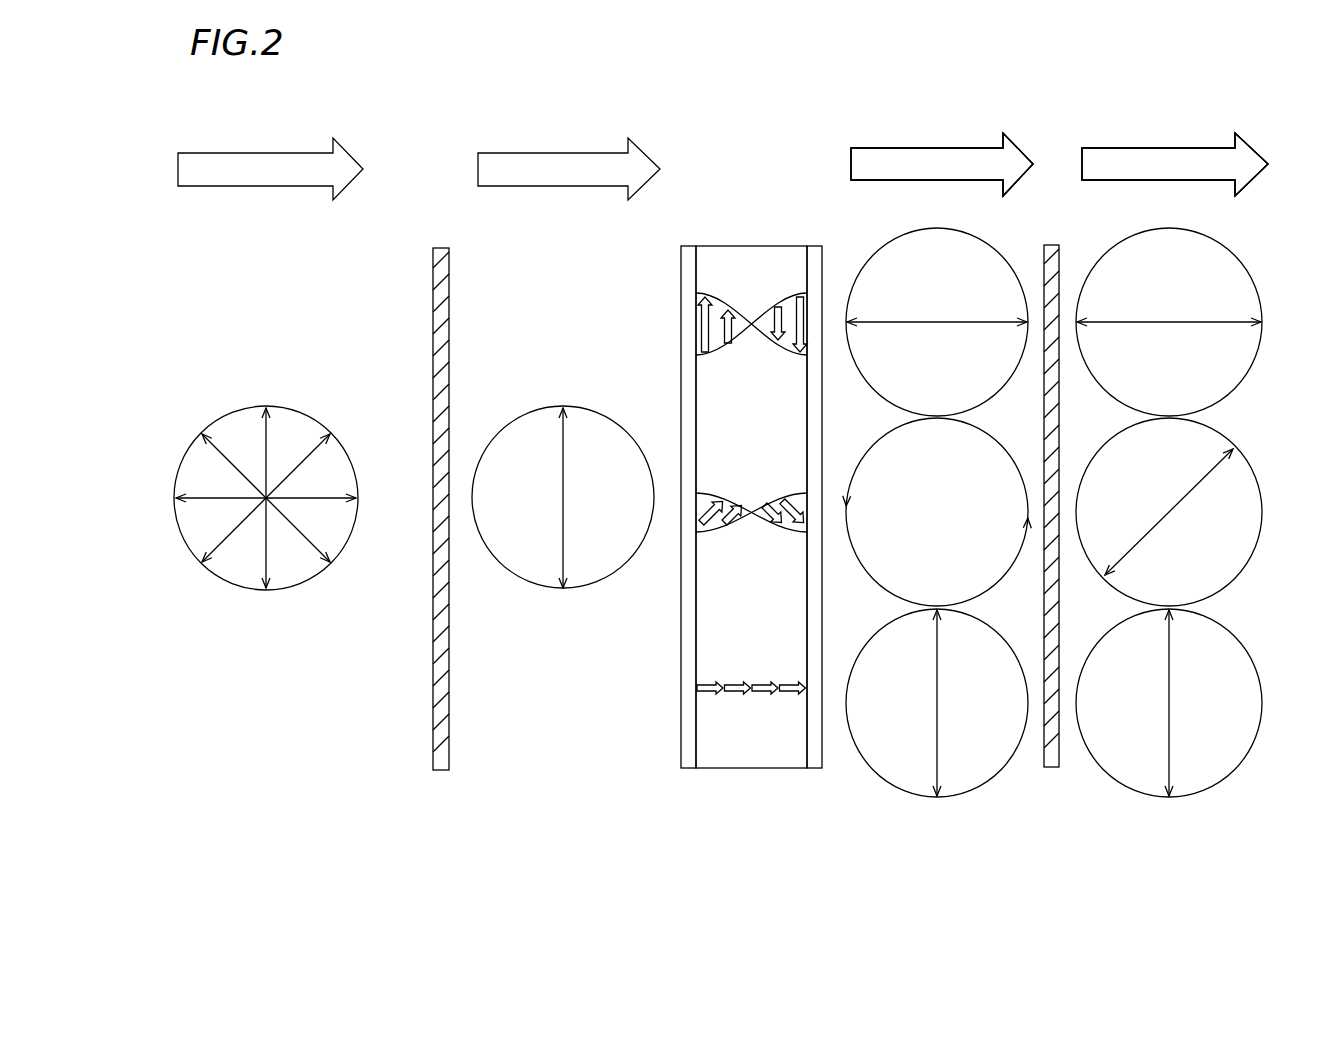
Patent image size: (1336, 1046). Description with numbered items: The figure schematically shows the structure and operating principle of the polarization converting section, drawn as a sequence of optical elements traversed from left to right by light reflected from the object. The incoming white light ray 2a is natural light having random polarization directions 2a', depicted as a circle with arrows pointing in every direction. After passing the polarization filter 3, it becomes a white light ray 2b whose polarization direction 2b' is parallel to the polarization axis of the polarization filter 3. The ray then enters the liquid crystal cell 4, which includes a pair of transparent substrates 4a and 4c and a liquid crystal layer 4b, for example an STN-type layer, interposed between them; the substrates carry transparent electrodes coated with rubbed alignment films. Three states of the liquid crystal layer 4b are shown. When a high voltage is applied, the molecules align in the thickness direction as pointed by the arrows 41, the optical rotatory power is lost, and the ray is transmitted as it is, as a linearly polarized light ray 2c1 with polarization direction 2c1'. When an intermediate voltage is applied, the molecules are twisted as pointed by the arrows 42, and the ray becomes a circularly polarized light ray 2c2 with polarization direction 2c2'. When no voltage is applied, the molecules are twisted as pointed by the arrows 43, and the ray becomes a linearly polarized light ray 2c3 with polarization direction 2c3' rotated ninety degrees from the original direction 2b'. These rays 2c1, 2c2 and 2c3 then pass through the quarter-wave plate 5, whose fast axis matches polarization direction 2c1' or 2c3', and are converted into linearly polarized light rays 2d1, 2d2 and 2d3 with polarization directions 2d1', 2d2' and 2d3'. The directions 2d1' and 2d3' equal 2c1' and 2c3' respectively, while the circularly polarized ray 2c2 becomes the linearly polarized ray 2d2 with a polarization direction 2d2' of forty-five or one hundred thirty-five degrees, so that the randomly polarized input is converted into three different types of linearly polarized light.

The white light ray 2a is at (270, 144).
The white light ray 2b is at (569, 144).
The linearly polarized light ray 2c1 is at (910, 139).
The circularly polarized light ray 2c2 is at (942, 139).
The linearly polarized light ray 2c3 is at (942, 139).
The linearly polarized light ray 2d1 is at (1163, 139).
The linearly polarized light ray 2d2 is at (1175, 139).
The linearly polarized light ray 2d3 is at (1186, 139).
The random polarization directions 2a' is at (266, 528).
The polarization direction 2b' is at (563, 528).
The polarization direction 2c1' is at (938, 733).
The polarization direction 2c2' is at (946, 502).
The polarization direction 2c3' is at (954, 307).
The polarization direction 2d1' is at (1170, 733).
The polarization direction 2d2' is at (1189, 498).
The polarization direction 2d3' is at (1188, 307).
The polarization filter 3 is at (440, 772).
The liquid crystal cell 4 is at (741, 580).
The transparent substrate 4a is at (688, 770).
The liquid crystal layer 4b is at (711, 553).
The transparent substrate 4c is at (815, 770).
The arrows 41 is at (697, 688).
The arrows 42 is at (697, 540).
The arrows 43 is at (697, 328).
The quarter-wave plate 5 is at (1050, 768).